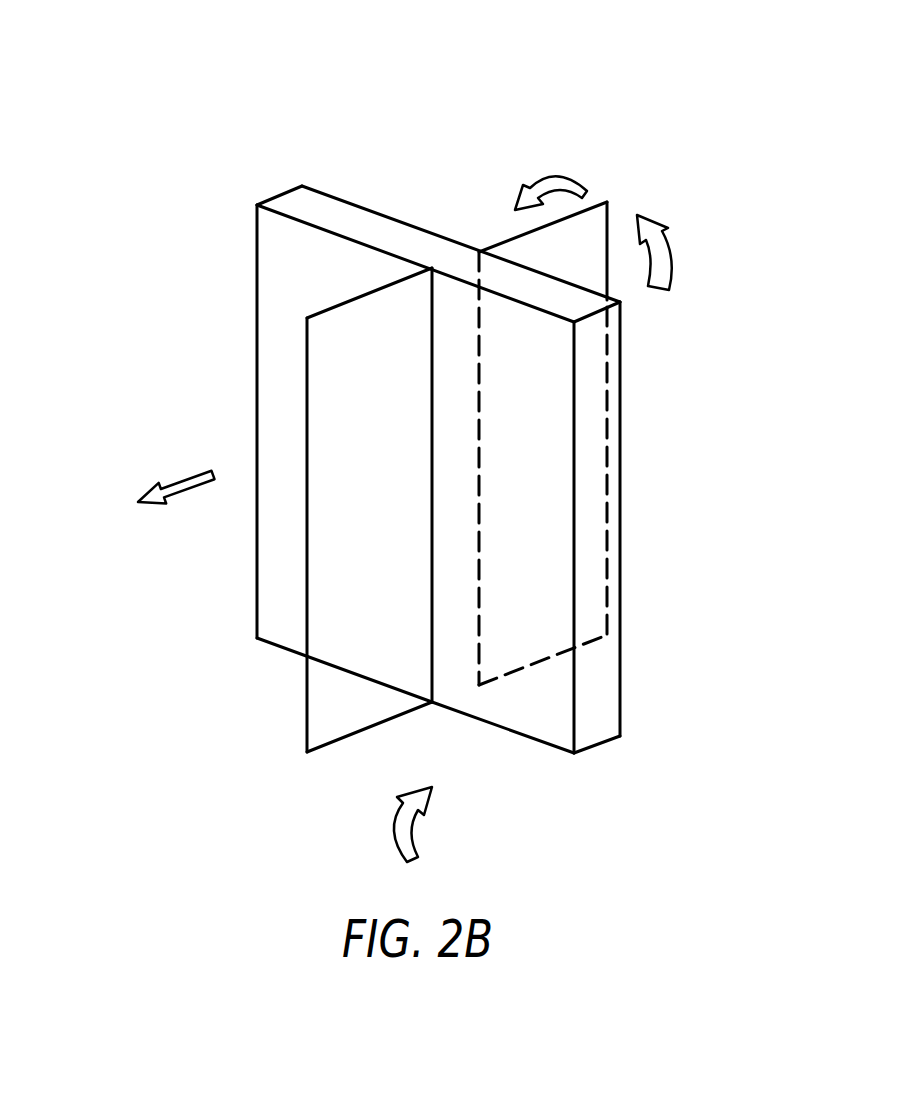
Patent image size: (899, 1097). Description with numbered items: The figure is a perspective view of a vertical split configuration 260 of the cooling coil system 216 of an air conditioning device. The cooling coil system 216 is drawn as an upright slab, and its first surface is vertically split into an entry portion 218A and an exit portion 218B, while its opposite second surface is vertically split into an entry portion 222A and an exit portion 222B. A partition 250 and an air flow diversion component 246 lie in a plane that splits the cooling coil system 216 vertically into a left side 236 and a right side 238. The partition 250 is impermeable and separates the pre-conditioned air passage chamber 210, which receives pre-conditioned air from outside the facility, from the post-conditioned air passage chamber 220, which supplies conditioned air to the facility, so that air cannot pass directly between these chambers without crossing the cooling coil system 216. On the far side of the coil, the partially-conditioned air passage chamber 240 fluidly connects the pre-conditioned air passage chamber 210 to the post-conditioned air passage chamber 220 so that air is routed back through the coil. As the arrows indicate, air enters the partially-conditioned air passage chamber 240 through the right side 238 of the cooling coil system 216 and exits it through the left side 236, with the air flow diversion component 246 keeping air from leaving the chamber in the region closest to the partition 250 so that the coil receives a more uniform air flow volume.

The vertical split configuration 260 is at (148, 95).
The cooling coil system 216 is at (308, 205).
The exit portion of the second surface 222B is at (377, 205).
The left side 236 is at (508, 164).
The partially-conditioned air passage chamber 240 is at (573, 263).
The air flow diversion component 246 is at (583, 218).
The exit portion of the first surface 218B is at (268, 390).
The post-conditioned air passage chamber 220 is at (327, 510).
The partition 250 is at (317, 726).
The pre-conditioned air passage chamber 210 is at (379, 532).
The right side 238 is at (724, 654).
The entry portion of the first surface 218A is at (568, 729).
The entry portion of the second surface 222A is at (630, 718).